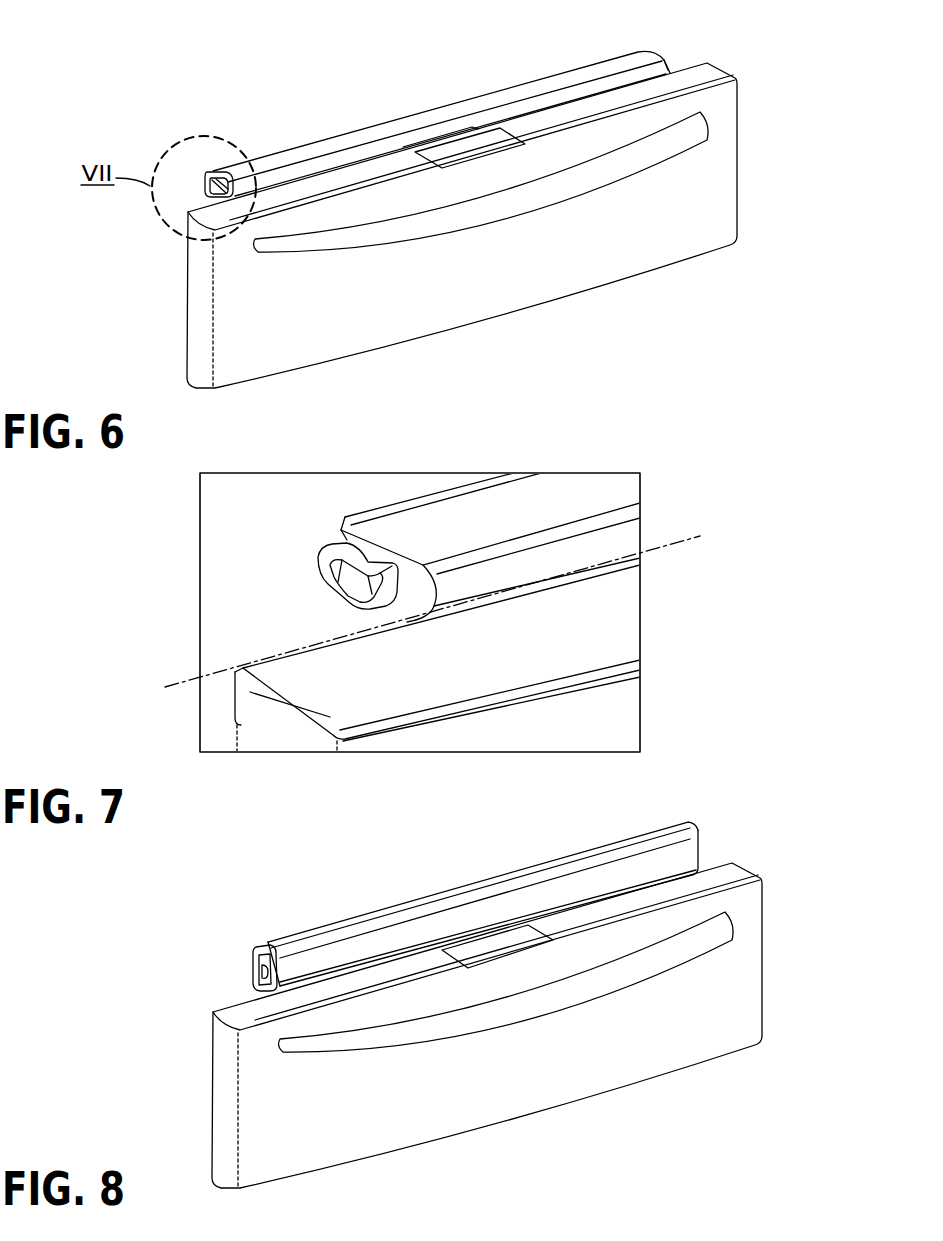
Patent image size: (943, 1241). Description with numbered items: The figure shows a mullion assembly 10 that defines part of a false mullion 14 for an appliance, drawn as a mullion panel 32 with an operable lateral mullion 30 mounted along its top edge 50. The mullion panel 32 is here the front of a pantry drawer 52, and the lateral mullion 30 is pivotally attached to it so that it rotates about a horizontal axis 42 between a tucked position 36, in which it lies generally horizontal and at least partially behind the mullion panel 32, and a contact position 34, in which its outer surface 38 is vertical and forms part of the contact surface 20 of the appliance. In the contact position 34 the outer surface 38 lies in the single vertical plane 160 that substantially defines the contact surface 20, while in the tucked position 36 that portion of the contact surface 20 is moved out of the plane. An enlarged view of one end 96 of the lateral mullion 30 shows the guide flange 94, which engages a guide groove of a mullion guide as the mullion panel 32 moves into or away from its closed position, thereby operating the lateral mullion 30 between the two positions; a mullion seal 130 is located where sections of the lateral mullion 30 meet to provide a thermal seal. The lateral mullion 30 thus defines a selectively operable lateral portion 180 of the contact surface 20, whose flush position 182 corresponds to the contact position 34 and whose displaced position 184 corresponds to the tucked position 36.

In FIG. 6, the mullion assembly 10 is at (343, 95).
In FIG. 7, the mullion assembly 10 is at (480, 451).
In FIG. 8, the mullion assembly 10 is at (320, 888).
In FIG. 6, the false mullion 14 is at (500, 78).
In FIG. 7, the false mullion 14 is at (588, 457).
In FIG. 8, the false mullion 14 is at (691, 810).
In FIG. 8, the contact surface 20 is at (699, 855).
In FIG. 6, the operable lateral mullion 30 is at (262, 151).
In FIG. 7, the operable lateral mullion 30 is at (377, 502).
In FIG. 8, the operable lateral mullion 30 is at (448, 885).
In FIG. 6, the mullion panel 32 is at (705, 198).
In FIG. 7, the mullion panel 32 is at (608, 710).
In FIG. 8, the mullion panel 32 is at (727, 1007).
In FIG. 8, the contact position 34 is at (293, 925).
In FIG. 6, the tucked position 36 is at (440, 96).
In FIG. 7, the tucked position 36 is at (647, 487).
In FIG. 8, the tucked position 36 is at (497, 946).
In FIG. 6, the outer surface 38 is at (340, 143).
In FIG. 7, the outer surface 38 is at (443, 517).
In FIG. 8, the outer surface 38 is at (563, 890).
In FIG. 7, the horizontal axis 42 is at (665, 548).
In FIG. 6, the top edge 50 is at (697, 66).
In FIG. 7, the top edge 50 is at (273, 657).
In FIG. 8, the top edge 50 is at (733, 862).
In FIG. 8, the pantry drawer 52 is at (200, 1063).
In FIG. 6, the guide flange 94 is at (219, 184).
In FIG. 7, the guide flange 94 is at (320, 567).
In FIG. 8, the guide flange 94 is at (253, 962).
In FIG. 7, the end 96 is at (318, 593).
In FIG. 8, the end 96 is at (241, 982).
In FIG. 7, the mullion seal 130 is at (347, 536).
In FIG. 8, the single vertical plane 160 is at (702, 848).
In FIG. 6, the selectively operable lateral portion 180 is at (568, 66).
In FIG. 7, the selectively operable lateral portion 180 is at (647, 515).
In FIG. 8, the selectively operable lateral portion 180 is at (638, 818).
In FIG. 8, the flush position 182 is at (392, 891).
In FIG. 6, the displaced position 184 is at (395, 113).
In FIG. 7, the displaced position 184 is at (540, 467).